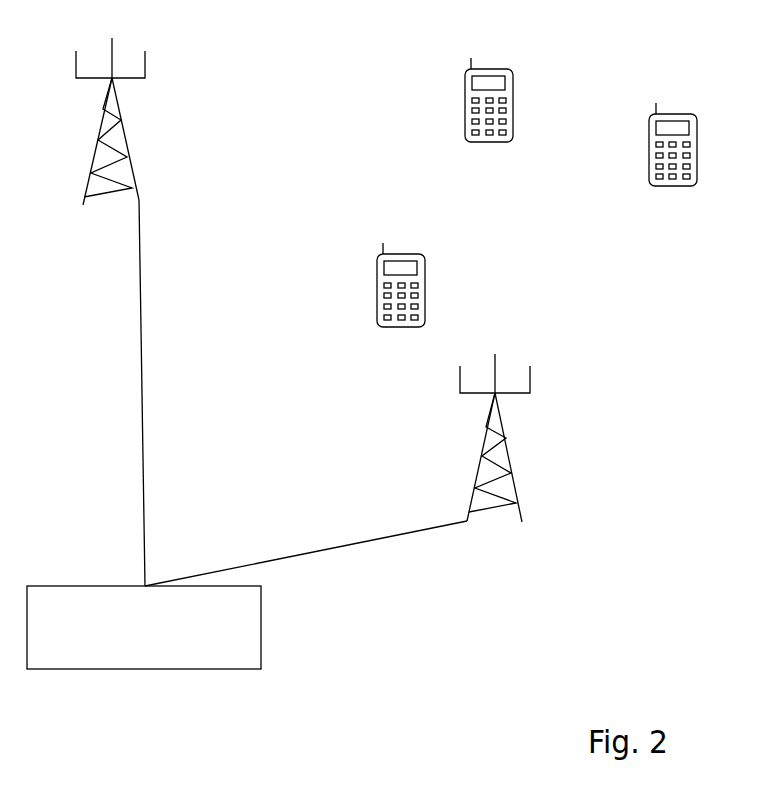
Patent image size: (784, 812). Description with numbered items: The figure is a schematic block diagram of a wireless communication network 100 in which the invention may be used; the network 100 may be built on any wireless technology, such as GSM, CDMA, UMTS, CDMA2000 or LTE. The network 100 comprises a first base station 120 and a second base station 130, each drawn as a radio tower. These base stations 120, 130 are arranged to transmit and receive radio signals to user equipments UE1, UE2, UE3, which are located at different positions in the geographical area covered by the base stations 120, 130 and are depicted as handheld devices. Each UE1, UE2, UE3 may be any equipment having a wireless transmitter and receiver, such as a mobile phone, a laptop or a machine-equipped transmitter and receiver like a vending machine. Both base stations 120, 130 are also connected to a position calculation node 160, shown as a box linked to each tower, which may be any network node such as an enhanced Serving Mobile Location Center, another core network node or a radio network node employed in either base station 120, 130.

The wireless communication network 100 is at (350, 34).
The first base station 120 is at (140, 173).
The second base station 130 is at (520, 484).
The position calculation node 160 is at (265, 617).
The UE UE1 is at (371, 285).
The UE UE2 is at (643, 144).
The UE UE3 is at (459, 100).